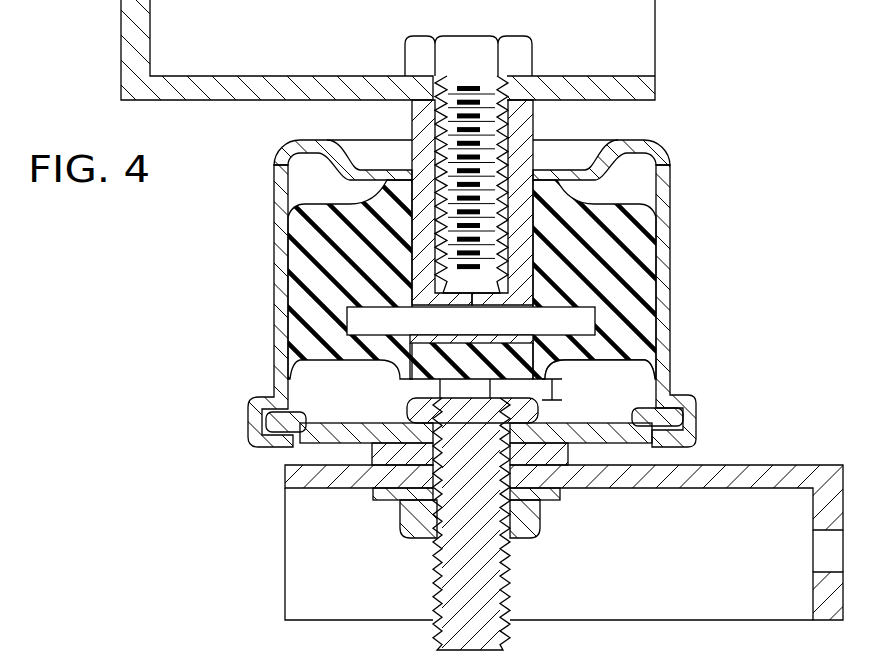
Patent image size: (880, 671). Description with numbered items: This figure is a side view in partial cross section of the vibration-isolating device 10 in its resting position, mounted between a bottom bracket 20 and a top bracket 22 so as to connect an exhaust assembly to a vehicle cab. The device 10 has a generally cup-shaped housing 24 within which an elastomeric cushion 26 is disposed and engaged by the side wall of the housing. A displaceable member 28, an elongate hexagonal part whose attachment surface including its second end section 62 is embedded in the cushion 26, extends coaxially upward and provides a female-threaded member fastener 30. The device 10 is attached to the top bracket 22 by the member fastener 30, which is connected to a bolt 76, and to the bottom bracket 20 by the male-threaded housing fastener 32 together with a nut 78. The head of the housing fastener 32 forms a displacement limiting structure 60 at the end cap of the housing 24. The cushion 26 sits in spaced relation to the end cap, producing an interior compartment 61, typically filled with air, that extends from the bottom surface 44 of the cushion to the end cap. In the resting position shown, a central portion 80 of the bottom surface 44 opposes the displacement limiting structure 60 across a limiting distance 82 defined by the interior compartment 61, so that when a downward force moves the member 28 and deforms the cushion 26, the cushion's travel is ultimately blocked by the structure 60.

The vibration-isolating device 10 is at (231, 258).
The bottom bracket 20 is at (288, 474).
The top bracket 22 is at (215, 93).
The housing 24 is at (273, 335).
The elastomeric cushion 26 is at (357, 212).
The displaceable member 28 is at (418, 128).
The member fastener 30 is at (512, 116).
The housing fastener 32 is at (433, 558).
The bottom surface of cushion 44 is at (605, 373).
The displacement limiting structure 60 is at (478, 356).
The interior compartment 61 is at (302, 442).
The second end section 62 is at (445, 378).
The bolt 76 is at (487, 82).
The nut 78 is at (408, 518).
The central portion of bottom surface 80 is at (408, 410).
The limiting distance 82 is at (555, 390).